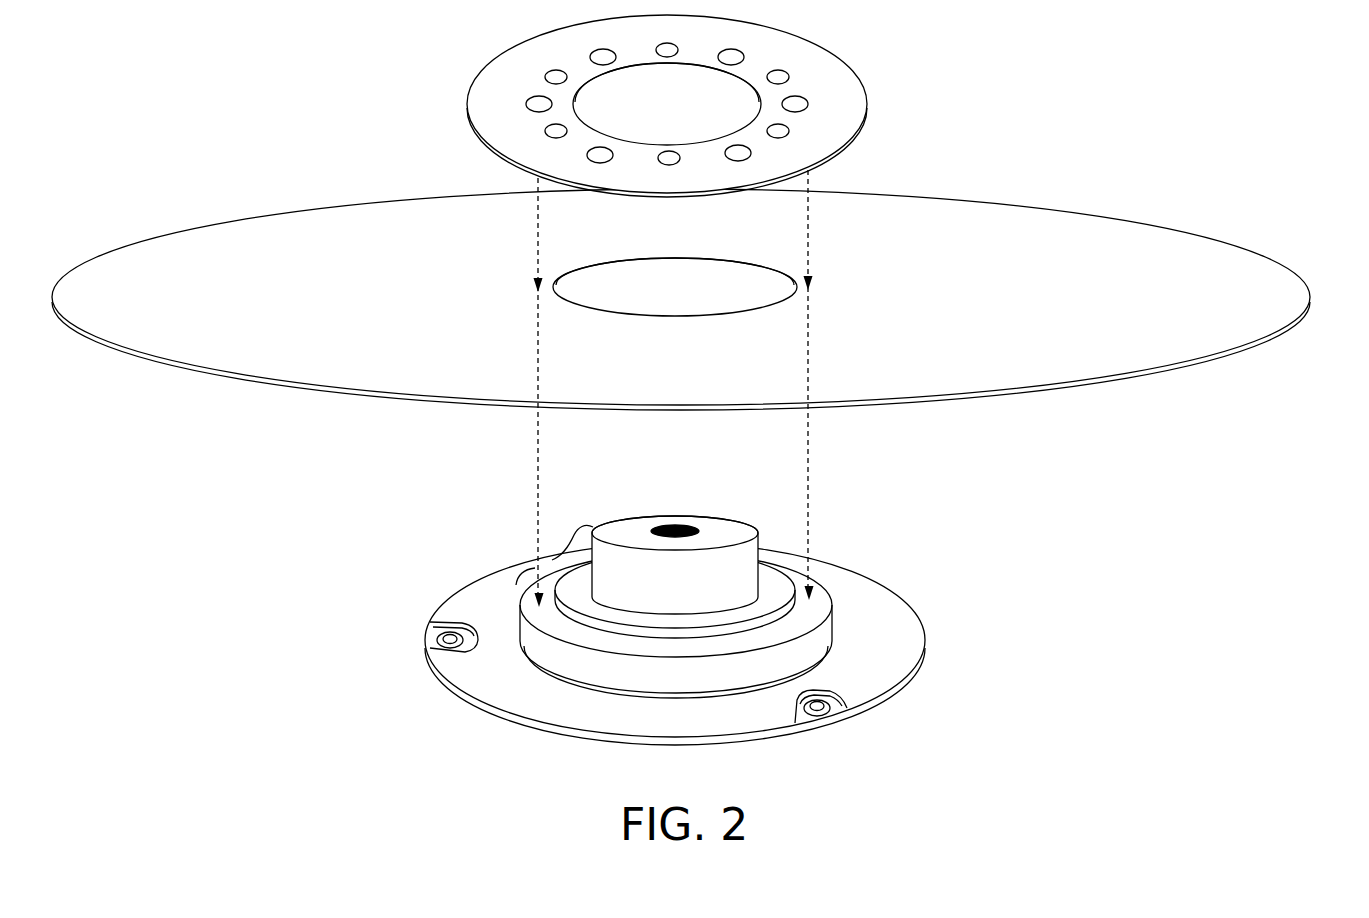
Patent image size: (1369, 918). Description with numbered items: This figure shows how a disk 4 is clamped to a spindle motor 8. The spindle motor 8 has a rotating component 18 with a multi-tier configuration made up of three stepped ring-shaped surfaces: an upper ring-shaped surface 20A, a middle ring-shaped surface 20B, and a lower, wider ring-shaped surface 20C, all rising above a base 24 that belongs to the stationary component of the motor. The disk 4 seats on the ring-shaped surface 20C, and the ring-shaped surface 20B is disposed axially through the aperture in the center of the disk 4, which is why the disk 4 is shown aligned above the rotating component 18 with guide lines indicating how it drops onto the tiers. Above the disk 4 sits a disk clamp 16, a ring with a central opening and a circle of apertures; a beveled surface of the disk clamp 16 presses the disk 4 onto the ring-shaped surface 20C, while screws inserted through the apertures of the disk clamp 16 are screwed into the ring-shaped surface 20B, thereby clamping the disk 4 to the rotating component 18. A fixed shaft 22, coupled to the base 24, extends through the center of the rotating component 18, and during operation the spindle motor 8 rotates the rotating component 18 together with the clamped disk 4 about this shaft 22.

The disk 4 is at (1312, 297).
The disk clamp 16 is at (865, 110).
The spindle motor 8 is at (750, 612).
The rotating component 18 is at (556, 558).
The ring-shaped surface 20A is at (633, 512).
The ring-shaped surface 20B is at (774, 575).
The ring-shaped surface 20C is at (821, 606).
The shaft 22 is at (678, 508).
The base 24 is at (927, 640).